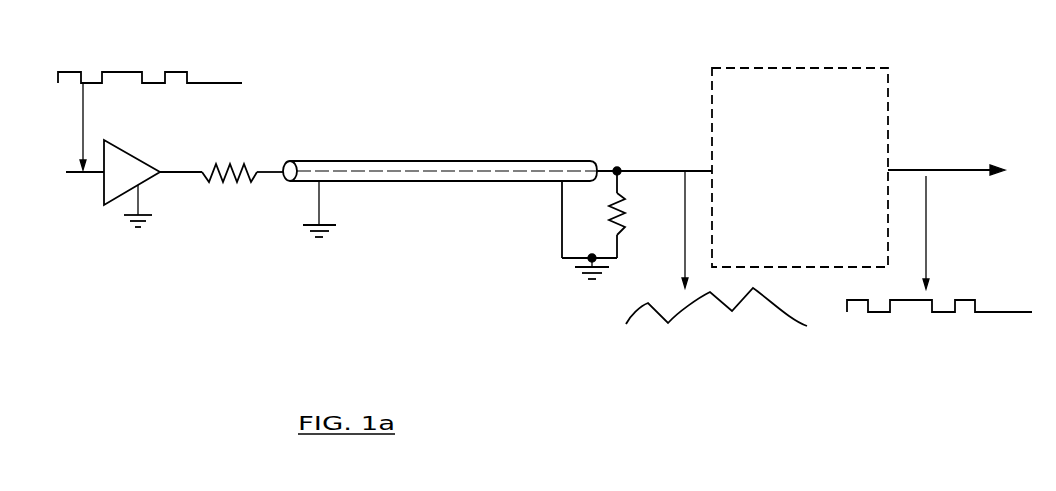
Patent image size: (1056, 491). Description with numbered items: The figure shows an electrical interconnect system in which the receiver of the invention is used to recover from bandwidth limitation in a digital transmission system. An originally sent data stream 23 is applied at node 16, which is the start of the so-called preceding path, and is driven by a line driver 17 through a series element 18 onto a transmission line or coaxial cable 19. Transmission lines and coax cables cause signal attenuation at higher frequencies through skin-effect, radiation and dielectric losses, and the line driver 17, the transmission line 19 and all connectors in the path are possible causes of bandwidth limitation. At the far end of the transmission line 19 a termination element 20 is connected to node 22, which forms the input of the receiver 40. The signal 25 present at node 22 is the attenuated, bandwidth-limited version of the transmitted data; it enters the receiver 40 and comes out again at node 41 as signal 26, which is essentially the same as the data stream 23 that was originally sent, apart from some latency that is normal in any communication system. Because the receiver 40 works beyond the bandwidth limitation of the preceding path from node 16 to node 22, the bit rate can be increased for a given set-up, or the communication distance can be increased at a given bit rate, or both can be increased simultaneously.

The input node 16 is at (85, 176).
The line driver 17 is at (140, 158).
The source resistor 18 is at (228, 183).
The transmission line or coaxial cable 19 is at (395, 183).
The termination resistor 20 is at (628, 217).
The input node of receiver 22 is at (637, 168).
The data stream 23 is at (117, 72).
The signal at node 22 25 is at (665, 323).
The output signal 26 is at (967, 300).
The receiver 40 is at (760, 67).
The output node 41 is at (915, 168).